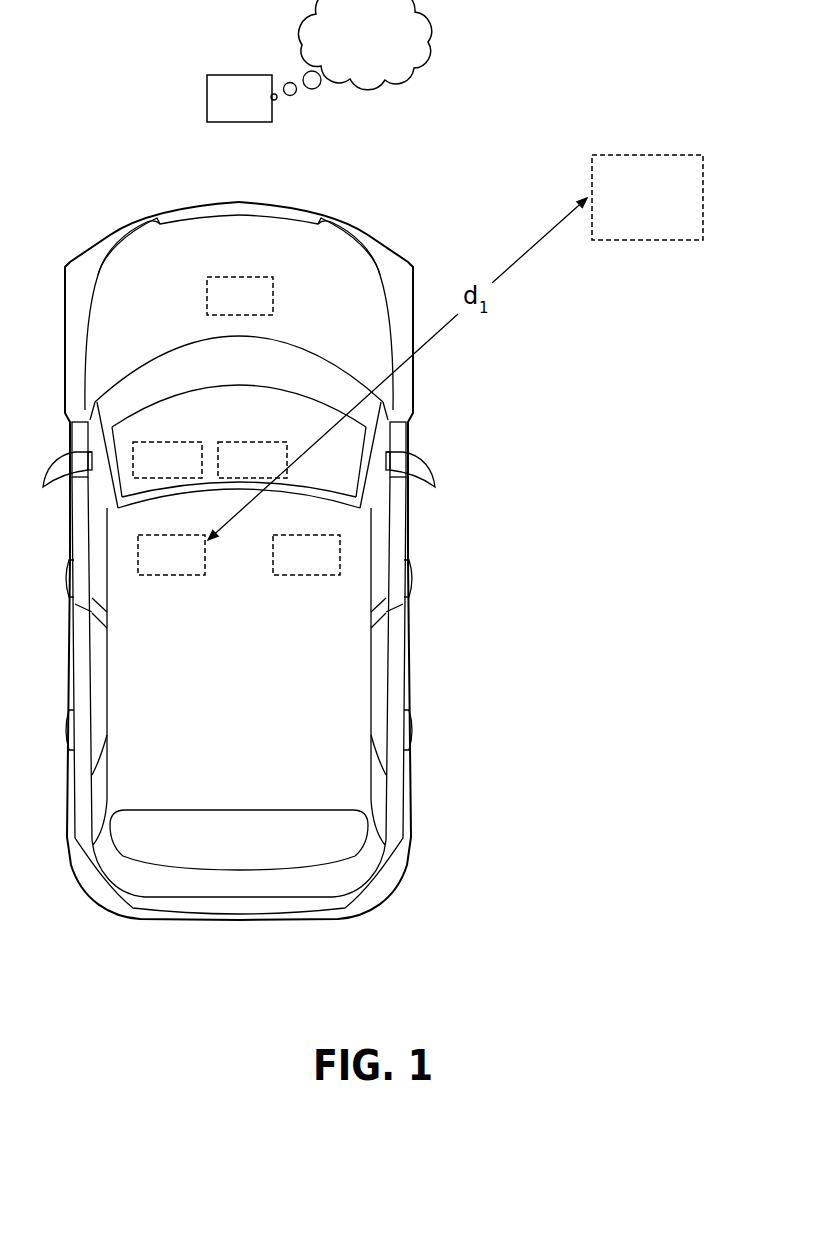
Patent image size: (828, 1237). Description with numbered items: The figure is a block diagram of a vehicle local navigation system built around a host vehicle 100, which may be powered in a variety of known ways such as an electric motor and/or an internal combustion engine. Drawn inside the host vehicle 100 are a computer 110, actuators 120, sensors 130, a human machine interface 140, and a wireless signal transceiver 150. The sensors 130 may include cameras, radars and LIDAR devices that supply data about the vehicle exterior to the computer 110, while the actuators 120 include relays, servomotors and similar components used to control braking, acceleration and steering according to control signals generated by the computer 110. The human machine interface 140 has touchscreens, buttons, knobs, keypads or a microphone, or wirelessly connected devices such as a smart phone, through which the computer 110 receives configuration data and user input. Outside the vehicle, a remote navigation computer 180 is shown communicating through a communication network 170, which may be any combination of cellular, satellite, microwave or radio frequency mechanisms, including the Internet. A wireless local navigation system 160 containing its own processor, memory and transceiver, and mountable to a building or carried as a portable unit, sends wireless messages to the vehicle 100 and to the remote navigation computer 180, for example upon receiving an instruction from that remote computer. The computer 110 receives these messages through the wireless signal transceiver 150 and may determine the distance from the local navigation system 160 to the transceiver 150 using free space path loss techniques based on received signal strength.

The host vehicle 100 is at (229, 706).
The computer 110 is at (306, 555).
The actuators 120 is at (240, 296).
The sensors 130 is at (252, 460).
The human machine interface (HMI) 140 is at (167, 460).
The wireless signal transceiver 150 is at (171, 555).
The wireless local navigation system 160 is at (647, 197).
The communication network 170 is at (365, 45).
The remote navigation computer 180 is at (264, 96).